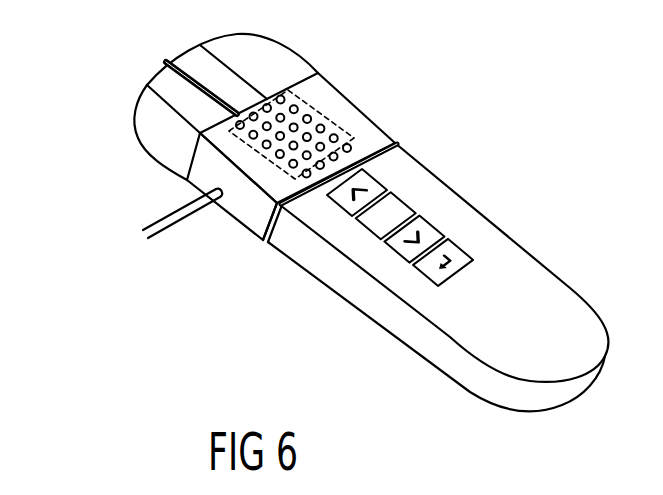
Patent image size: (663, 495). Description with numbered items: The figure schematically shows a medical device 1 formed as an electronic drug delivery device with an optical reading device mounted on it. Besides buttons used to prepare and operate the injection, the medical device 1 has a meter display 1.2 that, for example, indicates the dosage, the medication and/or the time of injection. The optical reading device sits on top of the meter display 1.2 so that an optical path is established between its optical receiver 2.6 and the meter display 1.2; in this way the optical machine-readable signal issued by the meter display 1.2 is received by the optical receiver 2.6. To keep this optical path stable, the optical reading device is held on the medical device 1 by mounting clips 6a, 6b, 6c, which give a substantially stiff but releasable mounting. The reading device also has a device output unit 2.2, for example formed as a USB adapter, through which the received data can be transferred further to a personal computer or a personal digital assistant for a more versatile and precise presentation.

The medical device 1 is at (498, 208).
The meter display 1.2 is at (309, 196).
The device output unit 2.2 is at (144, 226).
The optical receiver 2.6 is at (330, 117).
The mounting clip 6a is at (250, 218).
The mounting clip 6b is at (165, 61).
The mounting clip 6c is at (398, 142).